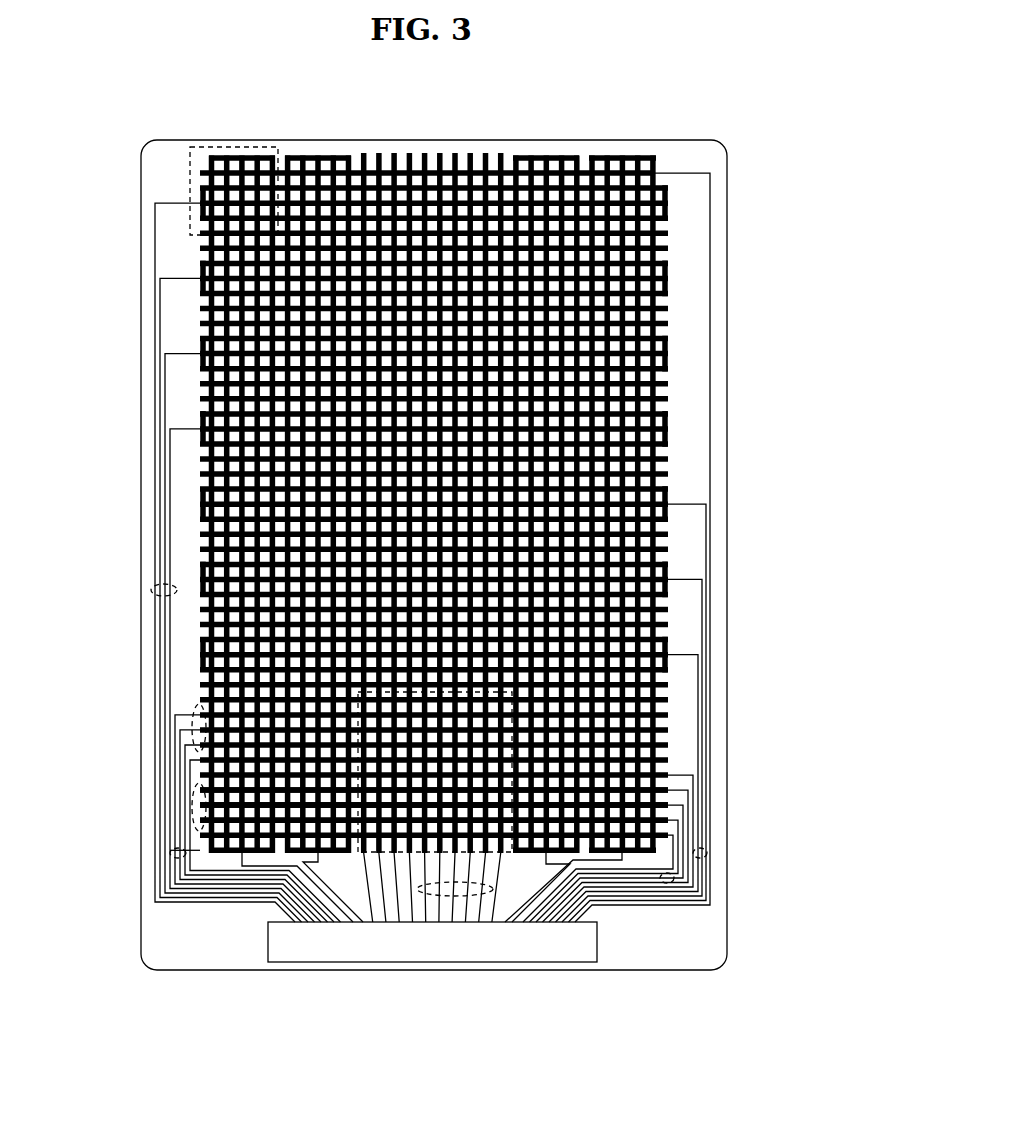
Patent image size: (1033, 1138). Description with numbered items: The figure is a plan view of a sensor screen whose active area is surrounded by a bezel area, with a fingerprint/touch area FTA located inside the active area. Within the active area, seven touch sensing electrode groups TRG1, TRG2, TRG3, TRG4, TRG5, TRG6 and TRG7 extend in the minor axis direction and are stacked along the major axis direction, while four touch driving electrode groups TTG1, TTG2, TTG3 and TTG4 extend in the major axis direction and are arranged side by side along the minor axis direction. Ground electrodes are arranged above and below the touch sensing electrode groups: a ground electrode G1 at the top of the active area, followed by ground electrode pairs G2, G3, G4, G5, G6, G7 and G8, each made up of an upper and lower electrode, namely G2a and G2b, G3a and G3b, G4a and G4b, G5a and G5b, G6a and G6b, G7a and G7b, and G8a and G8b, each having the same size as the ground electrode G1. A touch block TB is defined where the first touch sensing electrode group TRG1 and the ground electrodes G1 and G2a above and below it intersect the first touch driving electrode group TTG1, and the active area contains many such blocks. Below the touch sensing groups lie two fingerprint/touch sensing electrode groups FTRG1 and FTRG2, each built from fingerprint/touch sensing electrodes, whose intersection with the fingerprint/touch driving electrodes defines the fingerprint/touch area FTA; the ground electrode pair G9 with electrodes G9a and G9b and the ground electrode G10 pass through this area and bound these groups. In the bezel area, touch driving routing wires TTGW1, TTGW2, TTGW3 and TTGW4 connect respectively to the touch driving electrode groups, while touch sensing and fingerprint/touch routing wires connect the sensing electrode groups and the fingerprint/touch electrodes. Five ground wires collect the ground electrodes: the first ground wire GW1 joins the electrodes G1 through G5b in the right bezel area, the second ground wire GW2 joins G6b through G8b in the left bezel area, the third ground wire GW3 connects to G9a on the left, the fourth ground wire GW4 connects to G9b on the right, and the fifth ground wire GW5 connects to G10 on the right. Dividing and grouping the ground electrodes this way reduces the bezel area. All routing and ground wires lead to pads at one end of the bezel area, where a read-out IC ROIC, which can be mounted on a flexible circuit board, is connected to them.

The touch block TB is at (190, 157).
The first touch driving electrode group TTG1 is at (242, 157).
The second touch driving electrode group TTG2 is at (318, 157).
The third touch driving electrode group TTG3 is at (546, 157).
The fourth touch driving electrode group TTG4 is at (622, 157).
The first touch sensing electrode group TRG1 is at (200, 189).
The second touch sensing electrode group TRG2 is at (200, 264).
The third touch sensing electrode group TRG3 is at (200, 339).
The fourth touch sensing electrode group TRG4 is at (200, 415).
The fifth touch sensing electrode group TRG5 is at (200, 490).
The sixth touch sensing electrode group TRG6 is at (200, 566).
The seventh touch sensing electrode group TRG7 is at (200, 641).
The first fingerprint/touch sensing electrode group FTRG1 is at (84, 702).
The second fingerprint/touch sensing electrode group FTRG2 is at (84, 777).
The first ground wire GW1 is at (668, 806).
The second ground wire GW2 is at (200, 757).
The third ground wire GW3 is at (172, 856).
The fourth ground wire GW4 is at (700, 880).
The fifth ground wire GW5 is at (655, 872).
The ground electrode G1 is at (710, 168).
The ground electrode pair G2 is at (774, 218).
The ground electrode G2a is at (668, 233).
The ground electrode G2b is at (668, 248).
The ground electrode pair G3 is at (774, 295).
The ground electrode G3a is at (668, 308).
The ground electrode G3b is at (668, 324).
The ground electrode pair G4 is at (774, 371).
The ground electrode G4a is at (668, 384).
The ground electrode G4b is at (668, 399).
The ground electrode pair G5 is at (774, 447).
The ground electrode G5a is at (668, 459).
The ground electrode G5b is at (668, 474).
The ground electrode pair G6 is at (774, 524).
The ground electrode G6a is at (668, 534).
The ground electrode G6b is at (668, 549).
The ground electrode pair G7 is at (774, 599).
The ground electrode G7a is at (668, 609).
The ground electrode G7b is at (668, 625).
The ground electrode pair G8 is at (774, 675).
The ground electrode G8a is at (668, 685).
The ground electrode G8b is at (668, 700).
The ground electrode pair G9 is at (774, 752).
The ground electrode G9a is at (668, 775).
The ground electrode G9b is at (668, 790).
The ground electrode G10 is at (668, 821).
The touch driving routing wire TTGW1 is at (243, 858).
The touch driving routing wire TTGW2 is at (320, 858).
The touch driving routing wire TTGW3 is at (548, 858).
The touch driving routing wire TTGW4 is at (622, 858).
The fingerprint/touch area FTA is at (363, 856).
The read-out IC ROIC is at (432, 942).